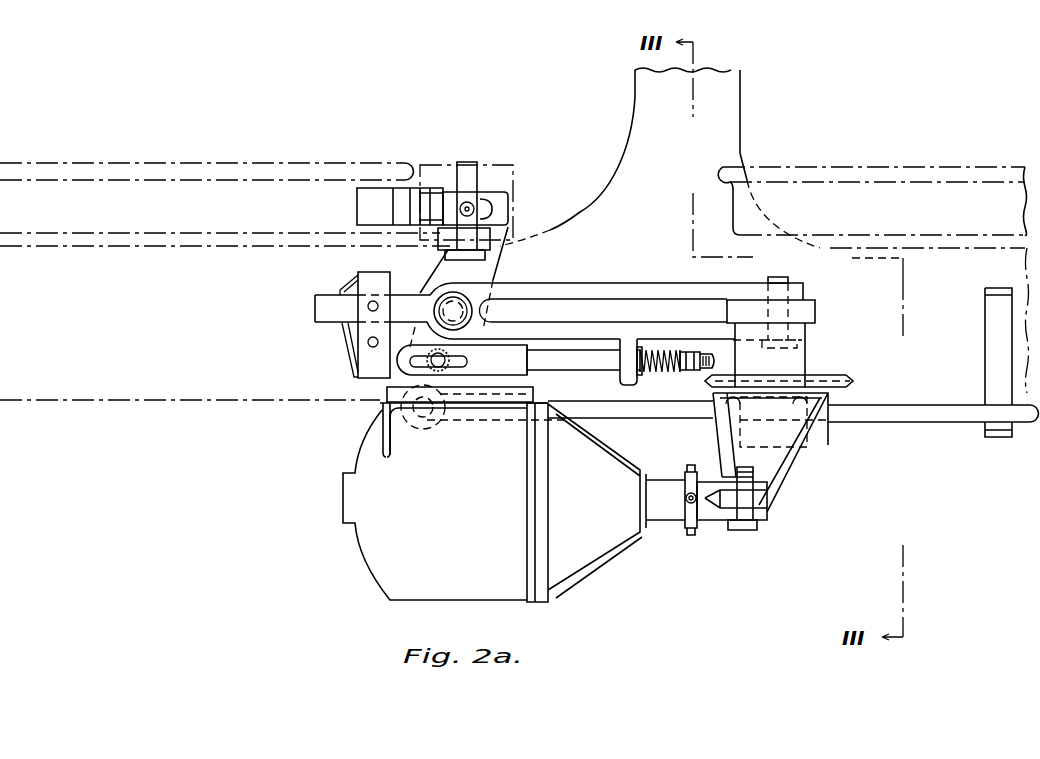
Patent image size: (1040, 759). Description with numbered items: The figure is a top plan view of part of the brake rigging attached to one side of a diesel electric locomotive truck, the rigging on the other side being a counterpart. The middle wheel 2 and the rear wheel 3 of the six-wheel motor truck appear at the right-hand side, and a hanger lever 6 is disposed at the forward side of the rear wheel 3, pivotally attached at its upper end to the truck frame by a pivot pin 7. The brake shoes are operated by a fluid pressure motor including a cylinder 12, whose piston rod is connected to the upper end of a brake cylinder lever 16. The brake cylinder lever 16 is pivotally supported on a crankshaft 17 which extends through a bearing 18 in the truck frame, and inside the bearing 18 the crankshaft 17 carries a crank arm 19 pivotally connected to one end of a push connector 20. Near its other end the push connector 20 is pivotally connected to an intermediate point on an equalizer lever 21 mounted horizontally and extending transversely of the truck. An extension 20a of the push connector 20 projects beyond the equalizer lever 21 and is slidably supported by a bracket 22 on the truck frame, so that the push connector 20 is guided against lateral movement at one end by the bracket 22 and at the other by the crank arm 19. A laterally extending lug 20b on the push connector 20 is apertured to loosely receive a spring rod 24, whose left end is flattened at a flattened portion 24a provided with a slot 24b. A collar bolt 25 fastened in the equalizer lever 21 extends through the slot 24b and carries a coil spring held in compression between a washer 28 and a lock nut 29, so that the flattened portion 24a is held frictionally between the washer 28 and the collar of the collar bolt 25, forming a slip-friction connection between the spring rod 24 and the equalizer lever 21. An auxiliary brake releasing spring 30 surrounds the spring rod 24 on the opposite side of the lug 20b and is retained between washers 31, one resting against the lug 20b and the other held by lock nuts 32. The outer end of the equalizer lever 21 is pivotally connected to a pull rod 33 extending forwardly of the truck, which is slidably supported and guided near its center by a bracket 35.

The middle wheel 2 is at (817, 170).
The rear wheel 3 is at (236, 163).
The hanger lever 6 is at (508, 211).
The pivot pin 7 is at (467, 172).
The cylinder 12 is at (378, 562).
The brake cylinder lever 16 is at (790, 477).
The crankshaft 17 is at (800, 450).
The bearing 18 is at (816, 384).
The crank arm 19 is at (810, 312).
The push connector 20 is at (637, 297).
The extension 20a is at (322, 305).
The lug 20b is at (626, 376).
The equalizer lever 21 is at (496, 266).
The bracket 22 is at (343, 351).
The spring rod 24 is at (559, 360).
The flattened portion 24a is at (503, 367).
The slot 24b is at (420, 363).
The collar bolt 25 is at (392, 388).
The washer 28 is at (440, 362).
The lock nut 29 is at (418, 395).
The auxiliary brake releasing spring 30 is at (656, 350).
The washer 31 is at (642, 377).
The lock nut 32 is at (697, 371).
The pull rod 33 is at (640, 412).
The bracket 35 is at (997, 384).